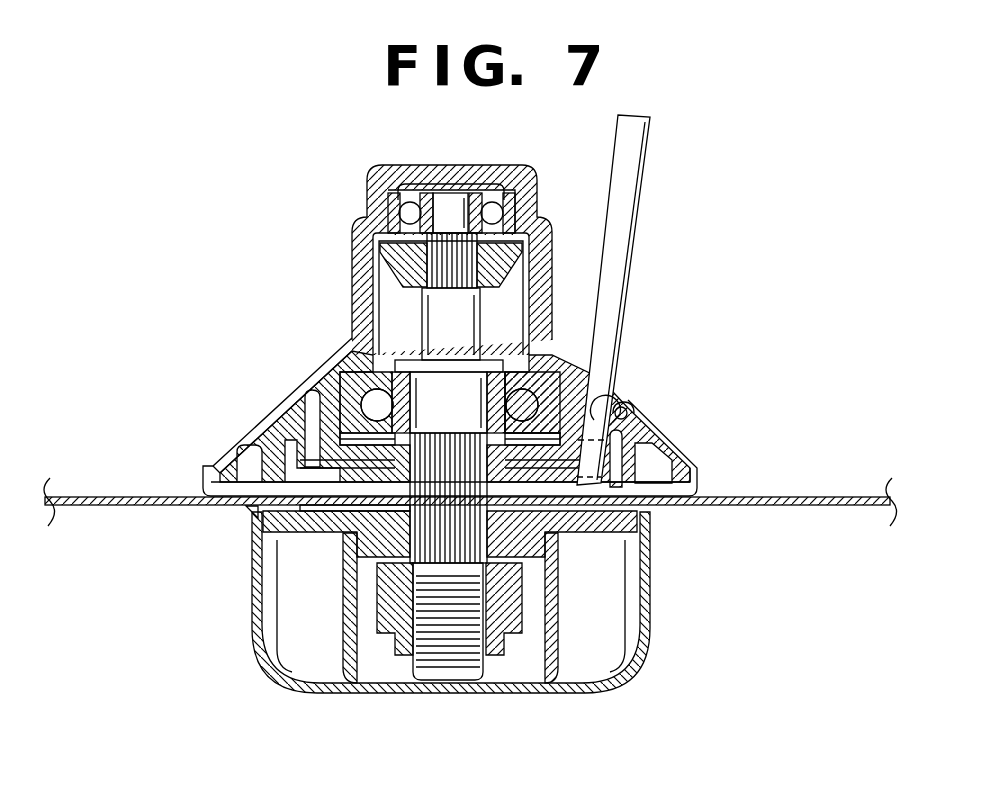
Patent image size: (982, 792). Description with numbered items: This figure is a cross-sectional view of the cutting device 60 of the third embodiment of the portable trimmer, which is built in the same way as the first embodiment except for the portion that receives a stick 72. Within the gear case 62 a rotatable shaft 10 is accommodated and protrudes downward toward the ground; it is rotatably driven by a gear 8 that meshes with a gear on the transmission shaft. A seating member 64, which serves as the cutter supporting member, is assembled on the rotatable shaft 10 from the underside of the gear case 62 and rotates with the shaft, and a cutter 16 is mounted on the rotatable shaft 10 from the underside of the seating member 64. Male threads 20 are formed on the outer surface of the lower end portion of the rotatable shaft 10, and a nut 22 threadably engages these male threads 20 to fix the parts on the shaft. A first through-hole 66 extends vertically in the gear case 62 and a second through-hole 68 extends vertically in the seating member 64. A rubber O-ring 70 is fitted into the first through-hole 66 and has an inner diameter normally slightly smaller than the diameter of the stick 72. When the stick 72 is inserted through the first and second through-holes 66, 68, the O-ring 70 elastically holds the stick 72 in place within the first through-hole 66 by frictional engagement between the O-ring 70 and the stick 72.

The cutting device 60 is at (328, 210).
The gear 8 is at (385, 260).
The rotatable shaft 10 is at (412, 315).
The stick 72 is at (622, 208).
The first through-hole 66 is at (613, 383).
The rubber O-ring 70 is at (628, 412).
The gear case 62 is at (652, 428).
The cutter 16 is at (830, 508).
The second through-hole 68 is at (640, 572).
The seating member 64 is at (350, 550).
The nut 22 is at (378, 640).
The male threads 20 is at (440, 660).